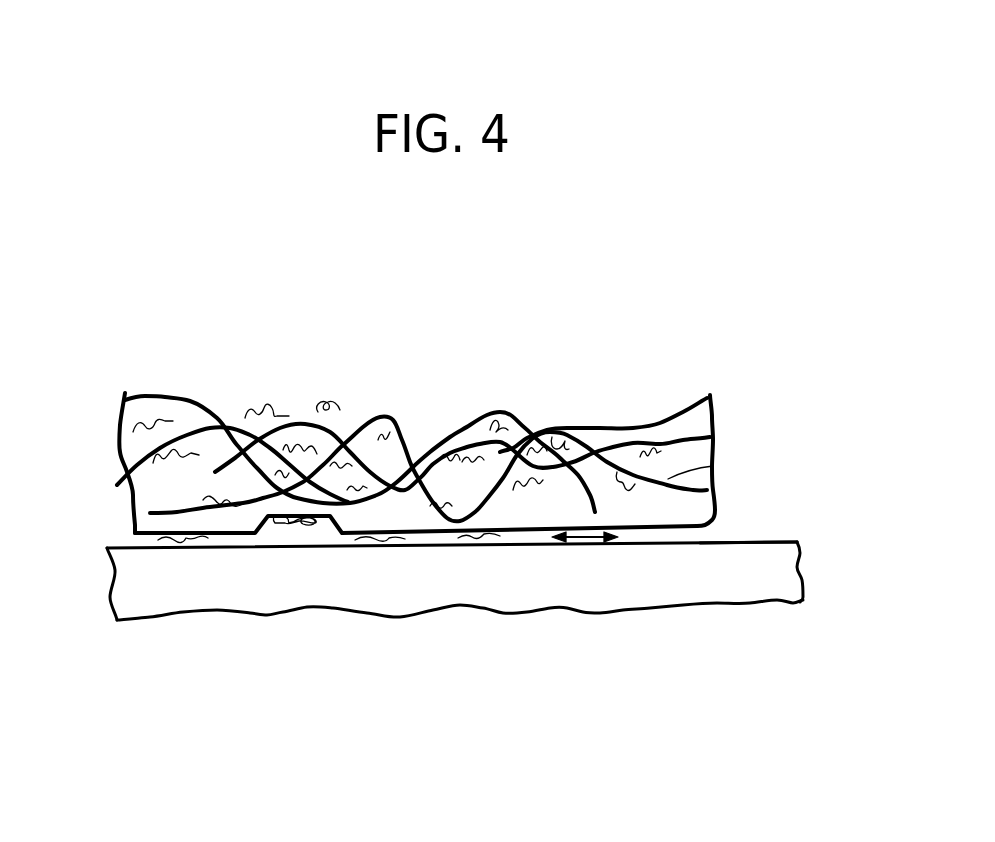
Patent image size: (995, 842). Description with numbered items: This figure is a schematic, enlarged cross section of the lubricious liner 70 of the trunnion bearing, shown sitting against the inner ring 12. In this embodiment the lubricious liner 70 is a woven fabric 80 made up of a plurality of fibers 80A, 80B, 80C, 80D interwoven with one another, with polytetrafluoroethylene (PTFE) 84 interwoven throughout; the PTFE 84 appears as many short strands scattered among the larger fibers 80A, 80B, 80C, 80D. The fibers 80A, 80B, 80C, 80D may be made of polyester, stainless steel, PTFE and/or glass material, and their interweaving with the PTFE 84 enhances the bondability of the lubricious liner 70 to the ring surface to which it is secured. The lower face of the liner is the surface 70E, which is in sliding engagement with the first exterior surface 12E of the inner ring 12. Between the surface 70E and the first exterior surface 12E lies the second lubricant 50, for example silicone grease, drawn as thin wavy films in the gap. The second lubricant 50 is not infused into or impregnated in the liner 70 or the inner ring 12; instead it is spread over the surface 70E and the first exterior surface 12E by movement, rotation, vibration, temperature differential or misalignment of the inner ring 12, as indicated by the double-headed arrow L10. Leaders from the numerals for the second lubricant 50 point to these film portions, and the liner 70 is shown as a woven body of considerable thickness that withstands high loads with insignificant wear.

The inner ring 12 is at (777, 568).
The first exterior surface 12E is at (777, 542).
The second lubricant 50 is at (180, 540).
The lubricious liner 70 is at (475, 475).
The surface 70E is at (718, 527).
The woven fabric 80 is at (401, 467).
The fiber 80A is at (637, 425).
The fiber 80B is at (710, 437).
The fiber 80C is at (713, 470).
The fiber 80D is at (595, 502).
The polytetrafluoroethylene (PTFE) 84 is at (163, 415).
The arrow L10 is at (583, 538).